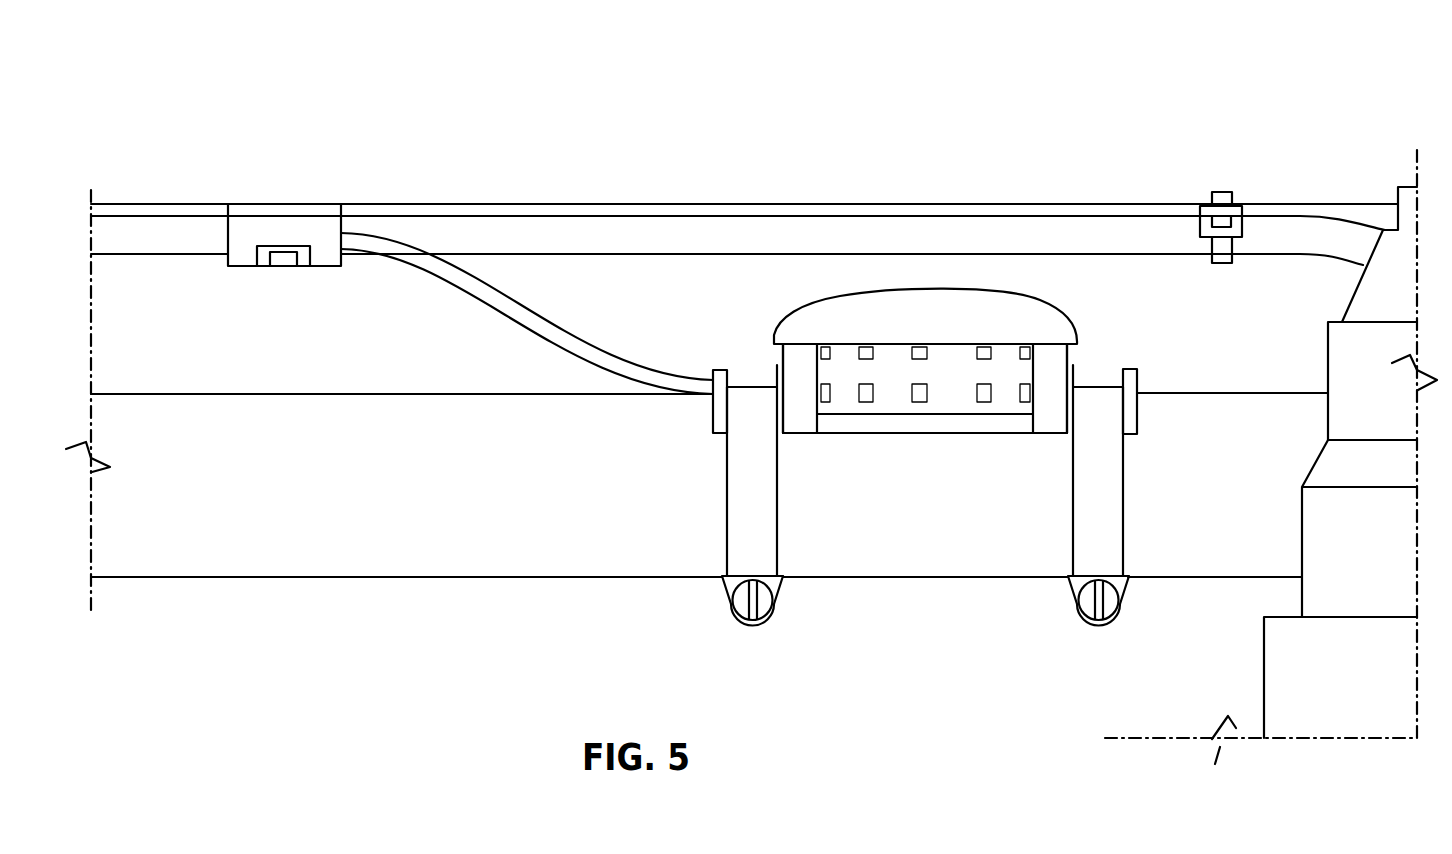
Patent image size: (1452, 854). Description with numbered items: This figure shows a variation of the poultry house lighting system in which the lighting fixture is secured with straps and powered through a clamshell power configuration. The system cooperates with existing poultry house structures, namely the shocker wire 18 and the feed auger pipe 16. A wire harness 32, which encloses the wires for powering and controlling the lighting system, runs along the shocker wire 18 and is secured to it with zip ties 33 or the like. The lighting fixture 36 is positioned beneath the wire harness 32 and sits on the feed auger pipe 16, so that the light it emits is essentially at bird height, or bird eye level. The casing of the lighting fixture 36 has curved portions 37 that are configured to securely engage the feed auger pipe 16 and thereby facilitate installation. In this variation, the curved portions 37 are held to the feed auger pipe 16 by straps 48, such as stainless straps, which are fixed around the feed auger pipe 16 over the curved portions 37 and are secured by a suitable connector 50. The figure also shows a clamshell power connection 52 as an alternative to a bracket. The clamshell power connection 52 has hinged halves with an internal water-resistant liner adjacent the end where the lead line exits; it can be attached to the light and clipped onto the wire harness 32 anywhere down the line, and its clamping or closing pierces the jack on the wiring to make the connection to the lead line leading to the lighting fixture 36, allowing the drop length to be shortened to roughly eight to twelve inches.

The feed auger pipe 16 is at (267, 552).
The shocker wire 18 is at (1303, 210).
The wire harness 32 is at (873, 237).
The zip ties 33 is at (1223, 198).
The lighting fixture 36 is at (1015, 288).
The curved portions 37 is at (1128, 378).
The straps 48 is at (738, 532).
The connector 50 is at (1092, 606).
The clamshell power connection 52 is at (260, 217).